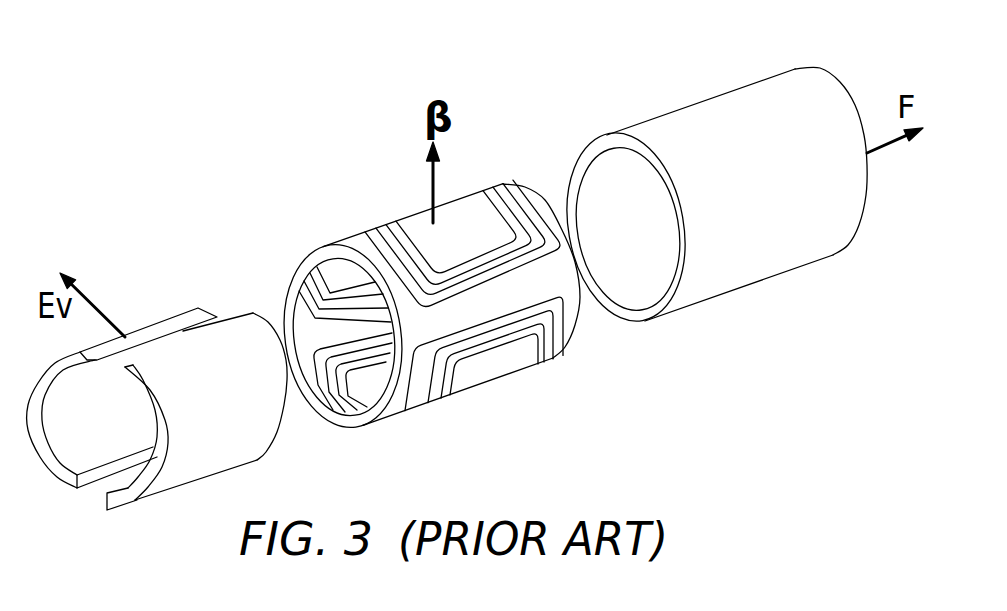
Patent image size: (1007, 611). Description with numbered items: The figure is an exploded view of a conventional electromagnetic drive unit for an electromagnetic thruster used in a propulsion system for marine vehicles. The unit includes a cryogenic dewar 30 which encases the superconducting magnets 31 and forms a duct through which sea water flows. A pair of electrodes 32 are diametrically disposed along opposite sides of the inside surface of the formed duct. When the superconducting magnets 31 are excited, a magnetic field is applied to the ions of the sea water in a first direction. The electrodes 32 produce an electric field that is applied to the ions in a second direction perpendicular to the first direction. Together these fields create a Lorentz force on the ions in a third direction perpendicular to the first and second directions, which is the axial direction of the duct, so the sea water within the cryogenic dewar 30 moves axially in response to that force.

The cryogenic dewar 30 is at (753, 86).
The superconducting magnets 31 is at (477, 195).
The electrodes 32 is at (153, 323).